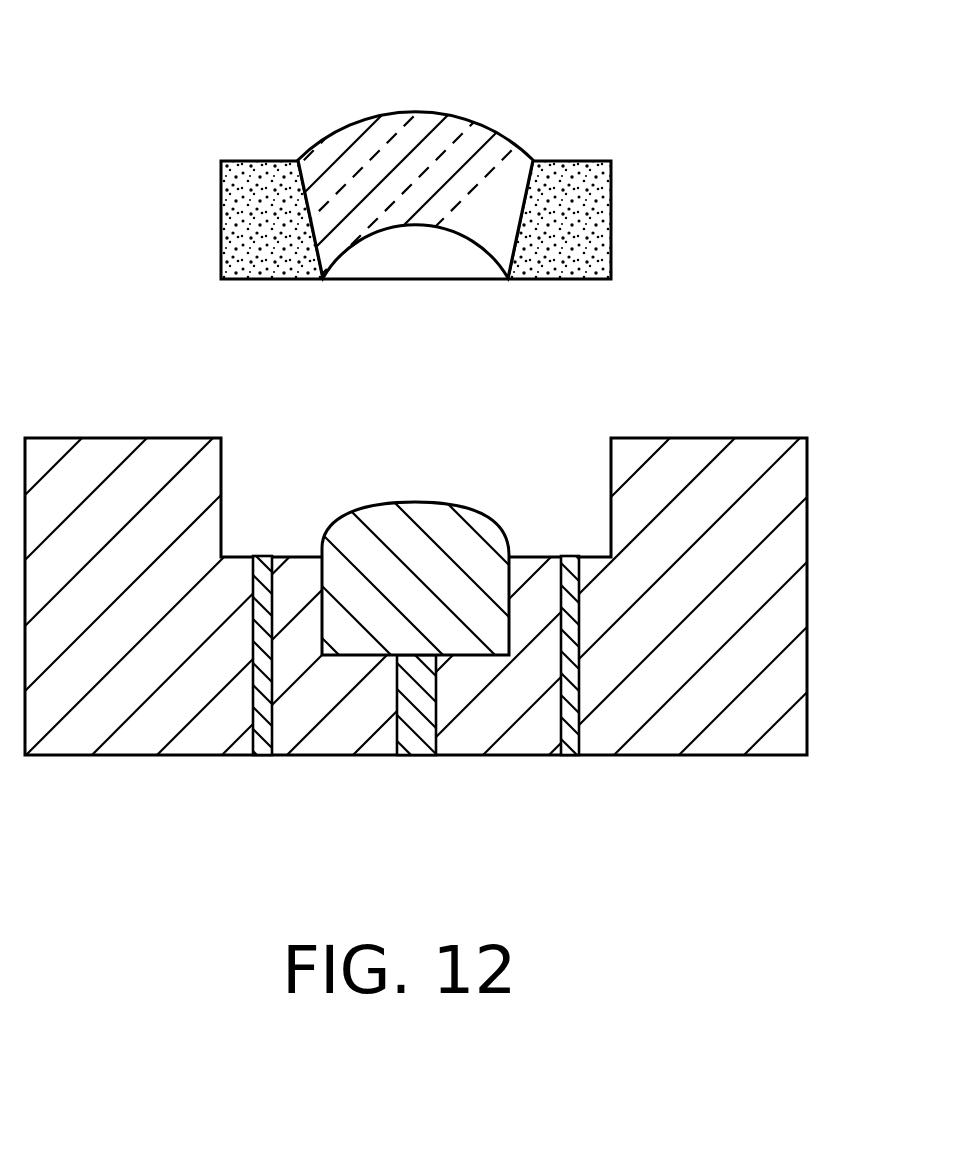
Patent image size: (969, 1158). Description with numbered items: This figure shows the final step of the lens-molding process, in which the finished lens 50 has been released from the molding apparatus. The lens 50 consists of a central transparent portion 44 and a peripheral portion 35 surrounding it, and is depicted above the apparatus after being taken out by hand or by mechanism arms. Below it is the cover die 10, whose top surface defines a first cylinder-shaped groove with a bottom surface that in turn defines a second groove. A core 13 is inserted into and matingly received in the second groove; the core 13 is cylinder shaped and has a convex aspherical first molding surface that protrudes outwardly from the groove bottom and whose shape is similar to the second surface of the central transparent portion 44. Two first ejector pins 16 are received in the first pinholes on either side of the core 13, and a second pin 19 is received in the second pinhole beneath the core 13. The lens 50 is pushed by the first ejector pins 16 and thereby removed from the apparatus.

The cover die 10 is at (767, 645).
The core 13 is at (463, 633).
The first ejector pins 16 is at (259, 729).
The second pin 19 is at (412, 731).
The peripheral portion 35 is at (578, 187).
The central transparent portion 44 is at (473, 147).
The lens 50 is at (473, 142).